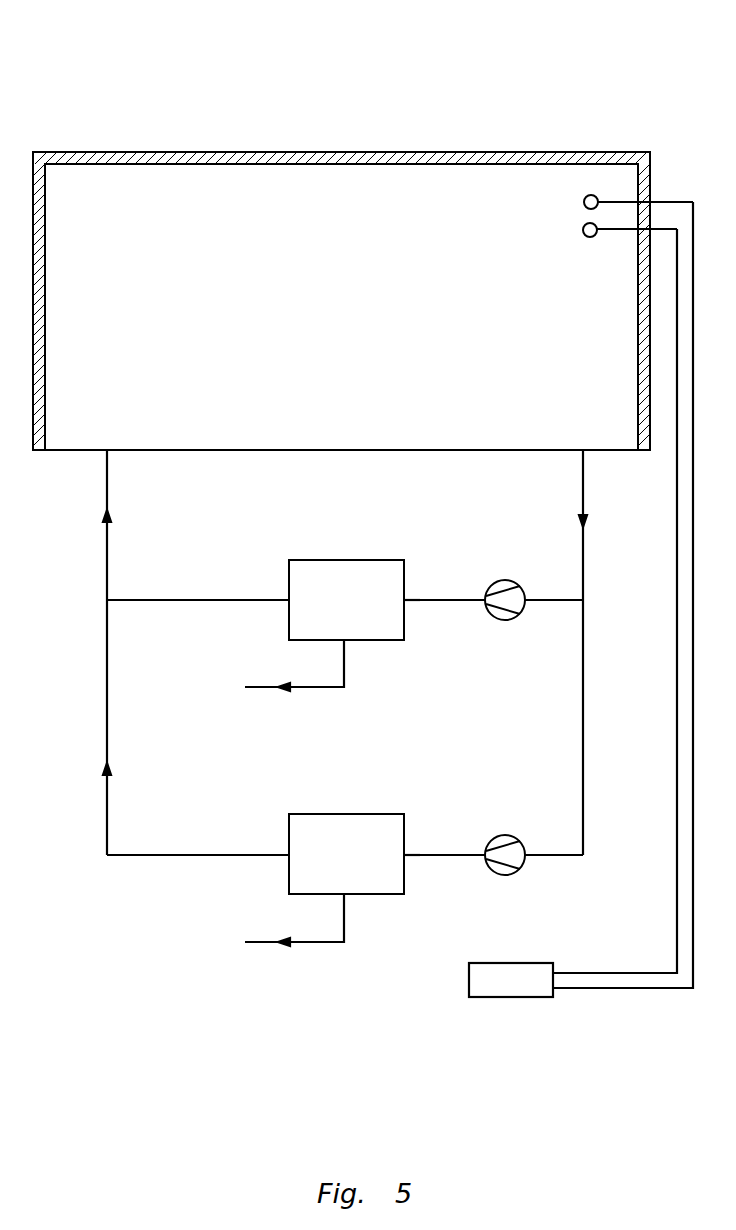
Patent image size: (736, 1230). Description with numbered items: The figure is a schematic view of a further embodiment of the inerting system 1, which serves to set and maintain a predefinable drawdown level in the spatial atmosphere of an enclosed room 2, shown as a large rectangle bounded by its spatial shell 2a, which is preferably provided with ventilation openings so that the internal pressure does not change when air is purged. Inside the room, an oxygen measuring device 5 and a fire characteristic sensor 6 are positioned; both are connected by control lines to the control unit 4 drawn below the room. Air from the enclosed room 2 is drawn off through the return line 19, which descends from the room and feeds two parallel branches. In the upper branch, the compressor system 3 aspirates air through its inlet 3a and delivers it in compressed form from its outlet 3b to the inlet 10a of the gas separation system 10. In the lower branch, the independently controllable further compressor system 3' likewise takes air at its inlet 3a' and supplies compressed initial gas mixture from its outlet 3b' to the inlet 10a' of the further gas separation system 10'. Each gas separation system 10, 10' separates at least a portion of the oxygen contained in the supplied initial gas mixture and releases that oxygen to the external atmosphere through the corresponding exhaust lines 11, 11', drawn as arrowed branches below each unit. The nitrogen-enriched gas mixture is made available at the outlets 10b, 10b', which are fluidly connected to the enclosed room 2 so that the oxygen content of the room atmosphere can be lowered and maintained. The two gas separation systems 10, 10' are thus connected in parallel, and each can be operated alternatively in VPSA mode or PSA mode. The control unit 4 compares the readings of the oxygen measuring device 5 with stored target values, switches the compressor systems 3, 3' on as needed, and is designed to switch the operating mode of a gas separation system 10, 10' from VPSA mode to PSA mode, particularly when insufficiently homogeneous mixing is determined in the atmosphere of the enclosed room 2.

The inerting system 1 is at (18, 509).
The enclosed room 2 is at (232, 188).
The spatial shell 2a is at (345, 157).
The compressor system 3 is at (527, 562).
The inlet of compressor system 3a is at (551, 629).
The outlet of compressor system 3b is at (446, 633).
The further compressor system 3' is at (529, 824).
The inlet of further compressor system 3a' is at (564, 888).
The outlet of further compressor system 3b' is at (446, 888).
The control unit 4 is at (488, 993).
The oxygen measuring device 5 is at (585, 224).
The fire characteristic sensor 6 is at (594, 197).
The gas separation system 10 is at (346, 600).
The inlet of gas separation system 10a is at (441, 566).
The outlet of gas separation system 10b is at (198, 566).
The further gas separation system 10' is at (346, 854).
The inlet of further gas separation system 10a' is at (444, 820).
The outlet of further gas separation system 10b' is at (198, 820).
The exhaust line 11 is at (290, 695).
The further exhaust line 11' is at (283, 950).
The return line 19 is at (583, 735).